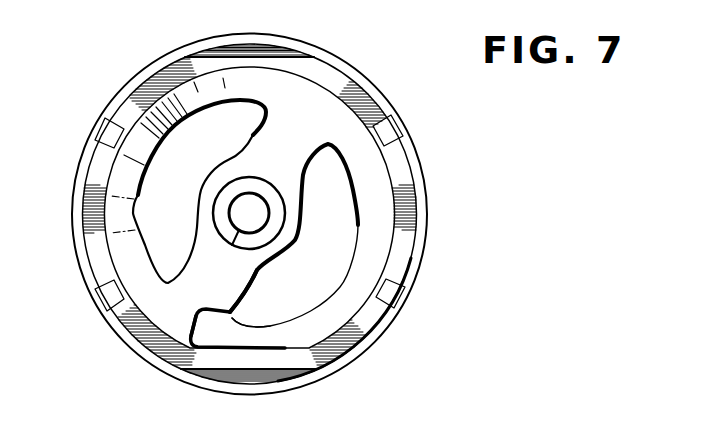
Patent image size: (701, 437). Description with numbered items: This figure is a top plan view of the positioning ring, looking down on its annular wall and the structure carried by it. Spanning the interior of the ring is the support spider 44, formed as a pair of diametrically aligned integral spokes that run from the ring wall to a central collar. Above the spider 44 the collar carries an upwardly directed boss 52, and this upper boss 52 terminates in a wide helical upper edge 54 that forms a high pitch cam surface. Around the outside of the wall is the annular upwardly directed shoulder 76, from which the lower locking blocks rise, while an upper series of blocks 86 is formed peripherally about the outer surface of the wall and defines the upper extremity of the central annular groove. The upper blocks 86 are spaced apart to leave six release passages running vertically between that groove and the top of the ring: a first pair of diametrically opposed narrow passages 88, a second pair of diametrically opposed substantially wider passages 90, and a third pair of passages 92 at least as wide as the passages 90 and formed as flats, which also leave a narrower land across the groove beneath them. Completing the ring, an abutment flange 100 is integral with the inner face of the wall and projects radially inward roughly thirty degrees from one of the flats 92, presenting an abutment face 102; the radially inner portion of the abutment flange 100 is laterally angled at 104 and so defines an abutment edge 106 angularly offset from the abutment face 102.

The support spider 44 is at (245, 144).
The upwardly directed boss 52 is at (270, 185).
The helical upper edge 54 is at (277, 214).
The annular upwardly directed shoulder 76 is at (360, 78).
The upper blocks 86 is at (157, 75).
The narrow release passages 88 is at (390, 132).
The wider release passages 90 is at (110, 127).
The flats 92 is at (254, 56).
The abutment flange 100 is at (209, 306).
The abutment face 102 is at (188, 330).
The laterally angled portion 104 is at (250, 278).
The abutment edge 106 is at (238, 309).